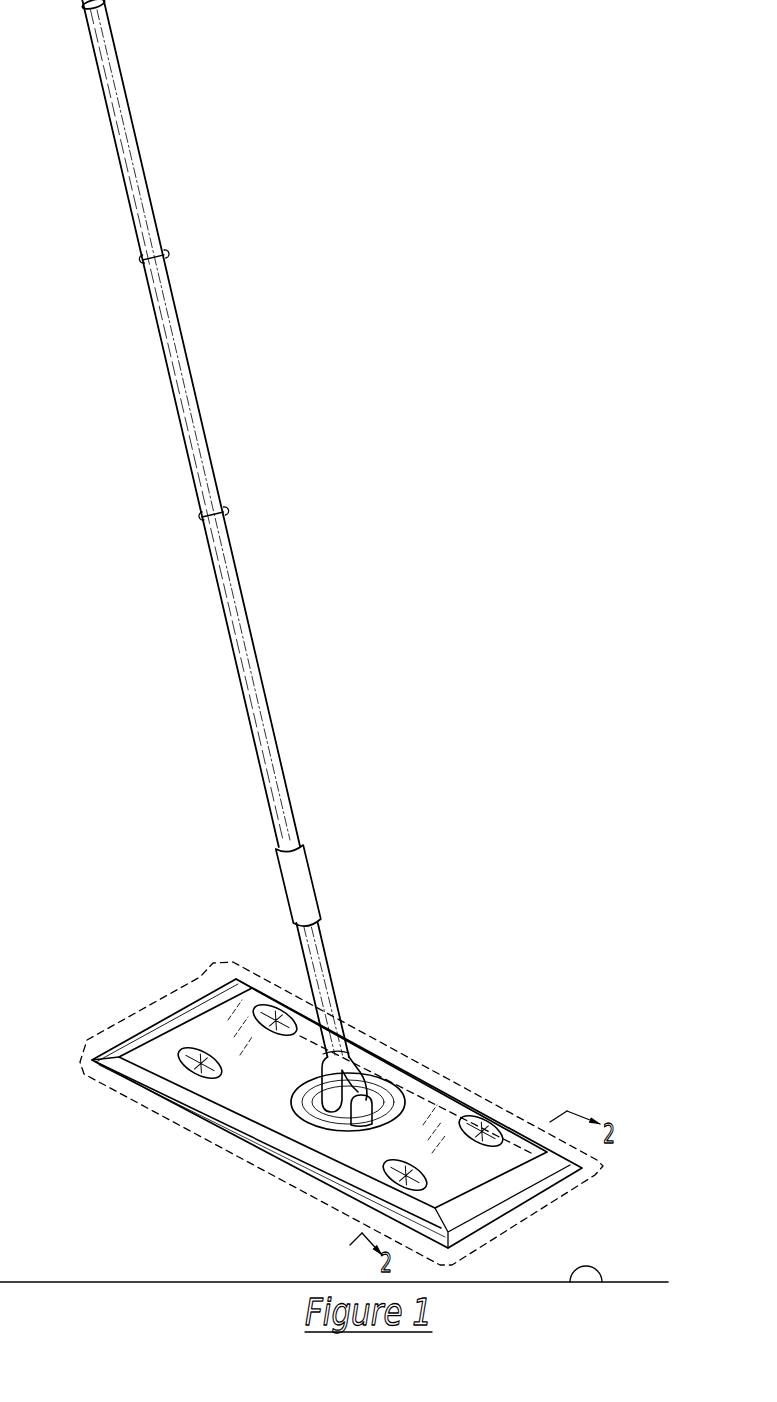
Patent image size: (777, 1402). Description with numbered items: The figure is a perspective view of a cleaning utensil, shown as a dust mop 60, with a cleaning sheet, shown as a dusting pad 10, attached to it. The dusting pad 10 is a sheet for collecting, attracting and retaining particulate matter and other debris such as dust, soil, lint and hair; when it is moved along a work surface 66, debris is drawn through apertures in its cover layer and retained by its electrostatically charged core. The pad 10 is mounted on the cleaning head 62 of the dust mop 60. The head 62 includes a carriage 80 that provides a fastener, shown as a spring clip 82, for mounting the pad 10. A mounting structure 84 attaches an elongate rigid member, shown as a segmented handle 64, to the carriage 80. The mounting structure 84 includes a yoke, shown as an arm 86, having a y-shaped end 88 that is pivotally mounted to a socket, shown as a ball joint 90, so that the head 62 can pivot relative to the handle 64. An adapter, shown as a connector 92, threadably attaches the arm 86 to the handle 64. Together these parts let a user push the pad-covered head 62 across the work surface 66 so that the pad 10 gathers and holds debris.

The dusting pad 10 is at (93, 1076).
The dust mop 60 is at (130, 632).
The cleaning head 62 is at (160, 976).
The segmented handle 64 is at (191, 371).
The work surface 66 is at (599, 1281).
The carriage 80 is at (157, 1025).
The spring clip 82 is at (254, 1008).
The mounting structure 84 is at (478, 992).
The arm 86 is at (331, 963).
The y-shaped end 88 is at (358, 1040).
The ball joint 90 is at (384, 1093).
The connector 92 is at (310, 872).